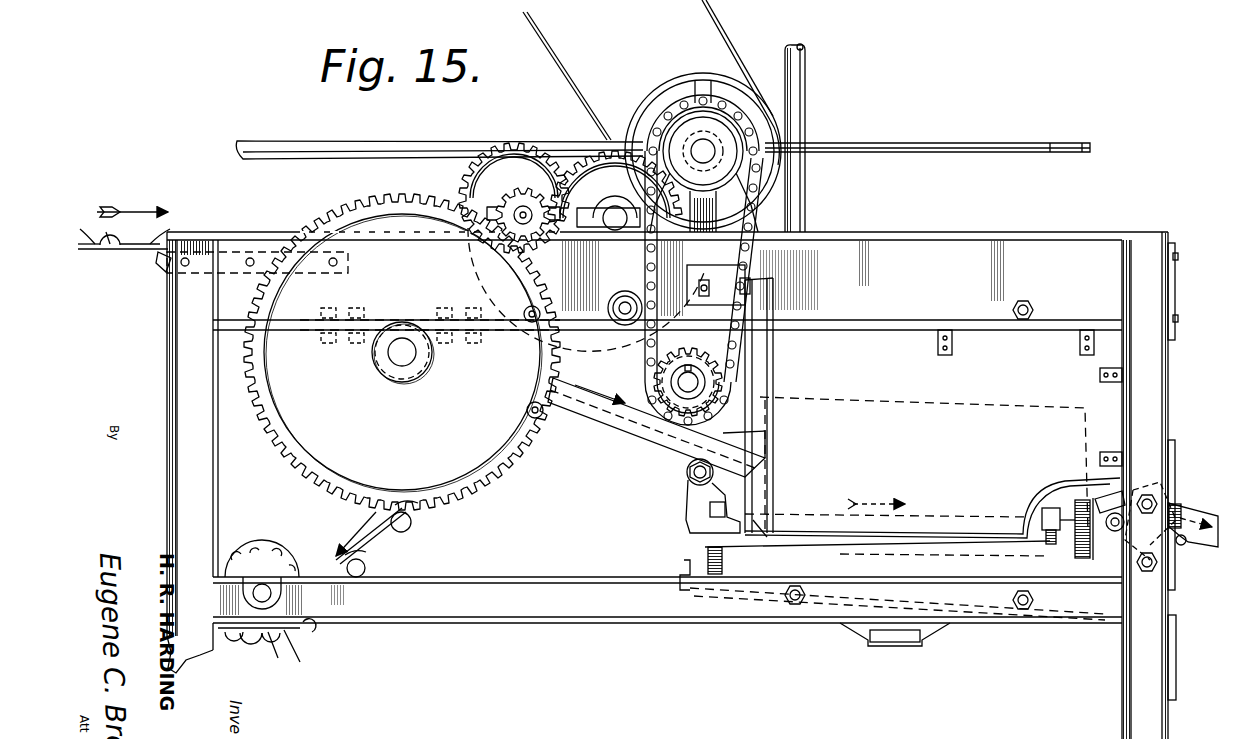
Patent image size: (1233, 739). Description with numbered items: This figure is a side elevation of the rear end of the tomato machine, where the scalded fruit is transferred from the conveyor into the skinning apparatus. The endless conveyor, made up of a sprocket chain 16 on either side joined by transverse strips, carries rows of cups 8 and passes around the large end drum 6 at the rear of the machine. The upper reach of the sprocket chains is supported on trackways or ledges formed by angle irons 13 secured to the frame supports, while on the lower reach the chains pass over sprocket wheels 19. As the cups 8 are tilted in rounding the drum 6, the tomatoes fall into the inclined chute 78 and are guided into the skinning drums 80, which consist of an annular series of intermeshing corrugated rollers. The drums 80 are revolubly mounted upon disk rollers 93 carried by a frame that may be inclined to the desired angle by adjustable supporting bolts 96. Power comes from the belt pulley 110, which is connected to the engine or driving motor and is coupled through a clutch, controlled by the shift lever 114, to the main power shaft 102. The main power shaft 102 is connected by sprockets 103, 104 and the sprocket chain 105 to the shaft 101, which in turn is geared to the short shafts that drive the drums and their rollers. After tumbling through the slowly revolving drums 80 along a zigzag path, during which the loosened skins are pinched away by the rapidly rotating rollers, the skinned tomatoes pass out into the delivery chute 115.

The drum 6 is at (474, 352).
The cups 8 is at (100, 232).
The angle irons 13 is at (160, 263).
The sprocket chain 16 is at (125, 252).
The sprocket wheels 19 is at (276, 550).
The inclined chute 78 is at (645, 443).
The skinning drums 80 is at (962, 408).
The disk rollers 93 is at (1088, 545).
The adjustable supporting bolts 96 is at (705, 560).
The shaft 101 is at (690, 382).
The main power shaft 102 is at (826, 138).
The sprocket 103 is at (666, 372).
The sprocket 104 is at (740, 168).
The sprocket chain 105 is at (774, 281).
The belt pulley 110 is at (660, 96).
The shift lever 114 is at (975, 144).
The delivery chute 115 is at (1200, 512).